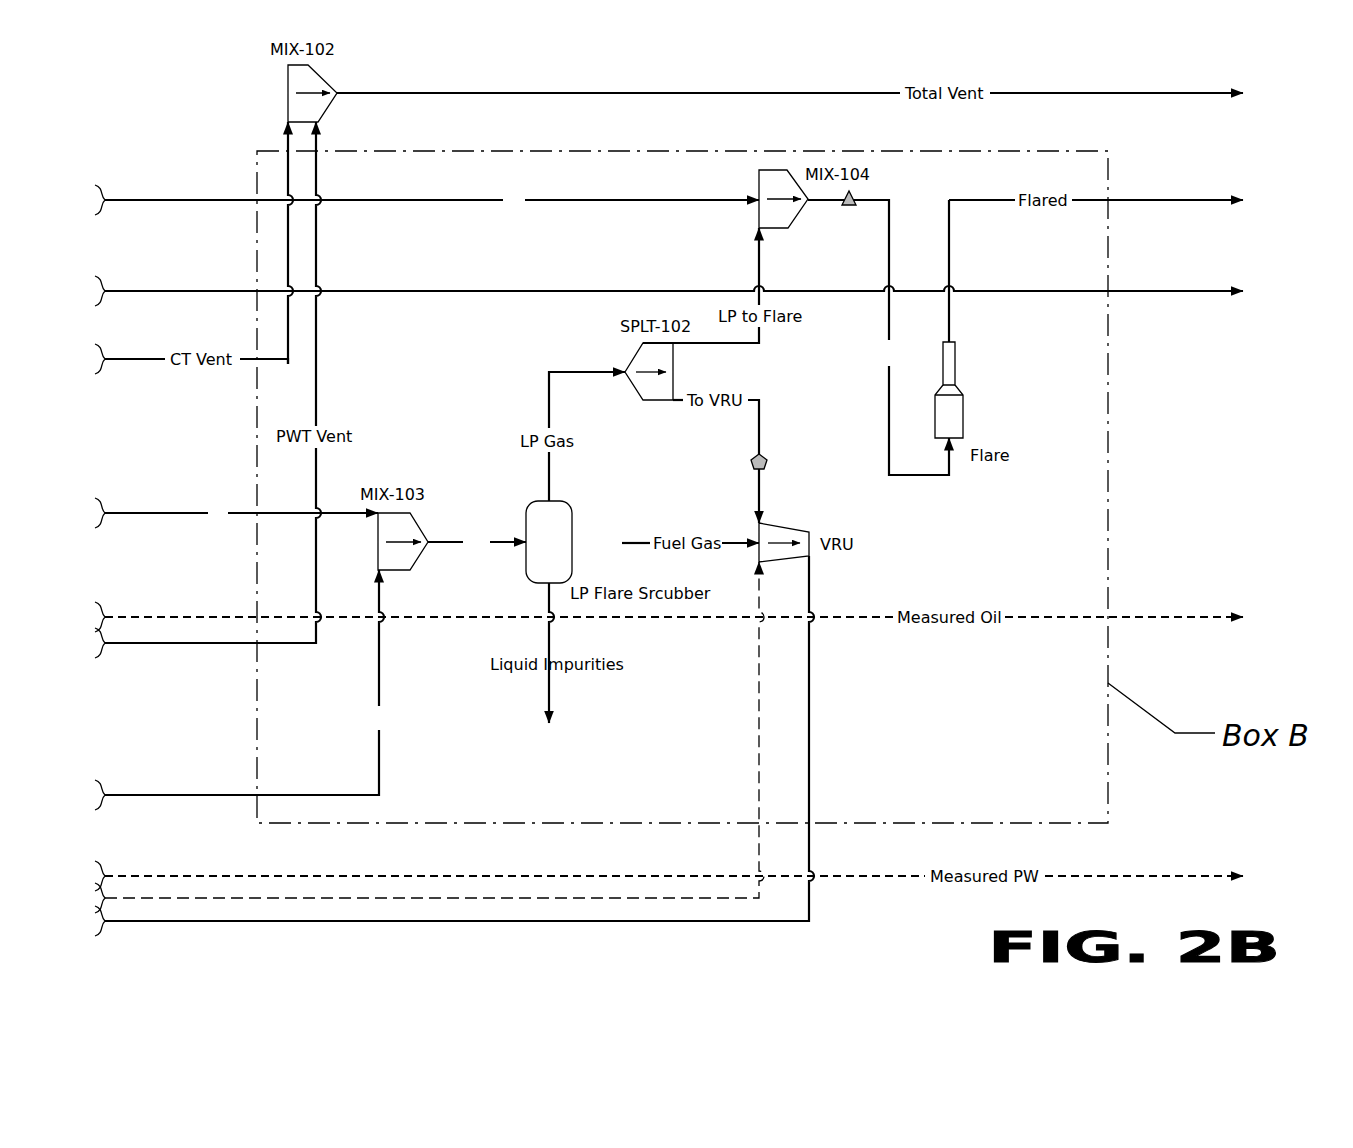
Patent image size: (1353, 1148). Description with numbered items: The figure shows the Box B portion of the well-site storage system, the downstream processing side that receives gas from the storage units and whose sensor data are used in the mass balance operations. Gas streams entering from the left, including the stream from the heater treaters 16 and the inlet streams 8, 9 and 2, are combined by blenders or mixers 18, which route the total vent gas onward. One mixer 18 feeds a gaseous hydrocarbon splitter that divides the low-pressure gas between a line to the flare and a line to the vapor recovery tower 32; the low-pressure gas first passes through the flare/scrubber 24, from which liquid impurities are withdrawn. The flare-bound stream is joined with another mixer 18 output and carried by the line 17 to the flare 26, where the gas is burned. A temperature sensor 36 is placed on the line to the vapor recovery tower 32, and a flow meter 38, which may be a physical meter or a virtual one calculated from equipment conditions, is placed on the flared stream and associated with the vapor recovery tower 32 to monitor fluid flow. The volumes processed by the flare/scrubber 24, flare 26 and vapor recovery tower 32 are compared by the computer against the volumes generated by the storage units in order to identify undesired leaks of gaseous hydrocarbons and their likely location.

The mixer 18 is at (288, 86).
The flare/scrubber 24 is at (572, 510).
The flare 26 is at (963, 418).
The temperature sensor 36 is at (766, 455).
The flow meter 38 is at (849, 210).
The vapor recovery tower 32 is at (775, 521).
The heater treater 16 is at (432, 200).
The stream 17 is at (878, 337).
The stream 8 is at (241, 513).
The stream 2 is at (477, 543).
The stream 9 is at (244, 682).